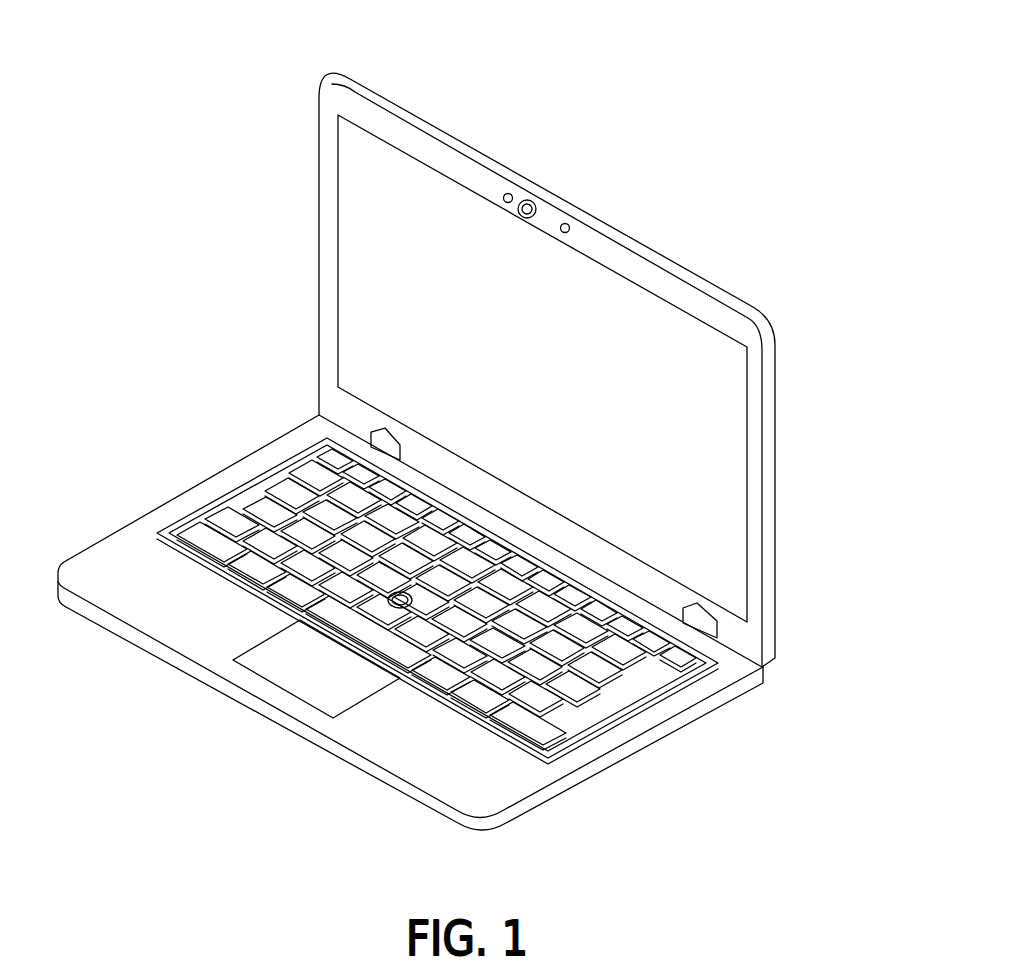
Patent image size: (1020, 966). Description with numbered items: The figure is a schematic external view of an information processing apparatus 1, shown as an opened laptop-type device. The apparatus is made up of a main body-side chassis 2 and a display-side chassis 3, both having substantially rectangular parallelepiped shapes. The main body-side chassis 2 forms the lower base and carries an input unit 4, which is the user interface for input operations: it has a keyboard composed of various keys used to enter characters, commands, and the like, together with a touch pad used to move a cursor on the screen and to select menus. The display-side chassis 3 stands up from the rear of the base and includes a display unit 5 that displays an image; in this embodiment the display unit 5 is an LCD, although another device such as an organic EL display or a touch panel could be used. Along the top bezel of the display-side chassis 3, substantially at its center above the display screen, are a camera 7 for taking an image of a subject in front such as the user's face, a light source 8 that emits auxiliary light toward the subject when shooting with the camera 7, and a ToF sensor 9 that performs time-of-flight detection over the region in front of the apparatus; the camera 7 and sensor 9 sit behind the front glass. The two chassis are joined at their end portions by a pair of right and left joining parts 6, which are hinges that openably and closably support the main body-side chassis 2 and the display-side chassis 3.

The information processing apparatus 1 is at (552, 70).
The main body-side chassis 2 is at (642, 780).
The display-side chassis 3 is at (808, 496).
The input unit 4 is at (182, 491).
The display unit 5 is at (352, 277).
The joining parts 6 is at (383, 432).
The camera 7 is at (530, 200).
The light source 8 is at (508, 192).
The ToF sensor 9 is at (566, 222).